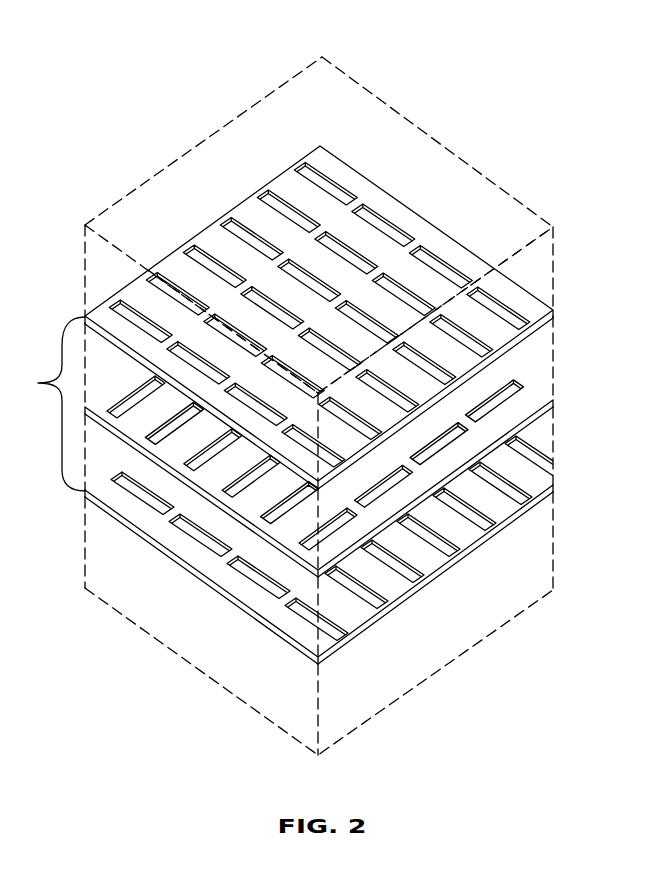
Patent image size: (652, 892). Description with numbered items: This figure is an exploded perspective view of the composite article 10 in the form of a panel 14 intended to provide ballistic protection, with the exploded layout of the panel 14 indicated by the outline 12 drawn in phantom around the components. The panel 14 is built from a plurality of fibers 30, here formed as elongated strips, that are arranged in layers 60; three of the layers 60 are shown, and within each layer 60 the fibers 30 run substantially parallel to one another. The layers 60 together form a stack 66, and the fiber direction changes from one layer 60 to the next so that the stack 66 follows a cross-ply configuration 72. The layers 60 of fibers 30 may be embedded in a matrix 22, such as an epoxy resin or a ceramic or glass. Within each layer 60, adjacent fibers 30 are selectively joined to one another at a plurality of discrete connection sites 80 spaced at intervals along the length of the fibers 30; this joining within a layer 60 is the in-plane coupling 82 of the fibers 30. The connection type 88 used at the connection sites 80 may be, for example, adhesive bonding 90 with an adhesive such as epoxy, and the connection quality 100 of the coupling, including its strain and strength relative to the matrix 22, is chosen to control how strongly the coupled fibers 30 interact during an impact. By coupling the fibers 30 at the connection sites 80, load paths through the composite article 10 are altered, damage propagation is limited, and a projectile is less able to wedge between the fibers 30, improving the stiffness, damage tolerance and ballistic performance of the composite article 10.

The composite article 10 is at (85, 225).
The first fluid inlet side 12 is at (304, 79).
The panel 14 is at (368, 90).
The matrix 22 is at (212, 657).
The fibers 30 is at (477, 257).
The layers 60 is at (310, 480).
The stack 66 is at (97, 502).
The cross-ply configuration 72 is at (556, 313).
The connection sites 80 is at (325, 200).
The in-plane coupling 82 is at (527, 294).
The connection type 88 is at (224, 222).
The adhesive bonding 90 is at (343, 637).
The connection quality 100 is at (298, 166).